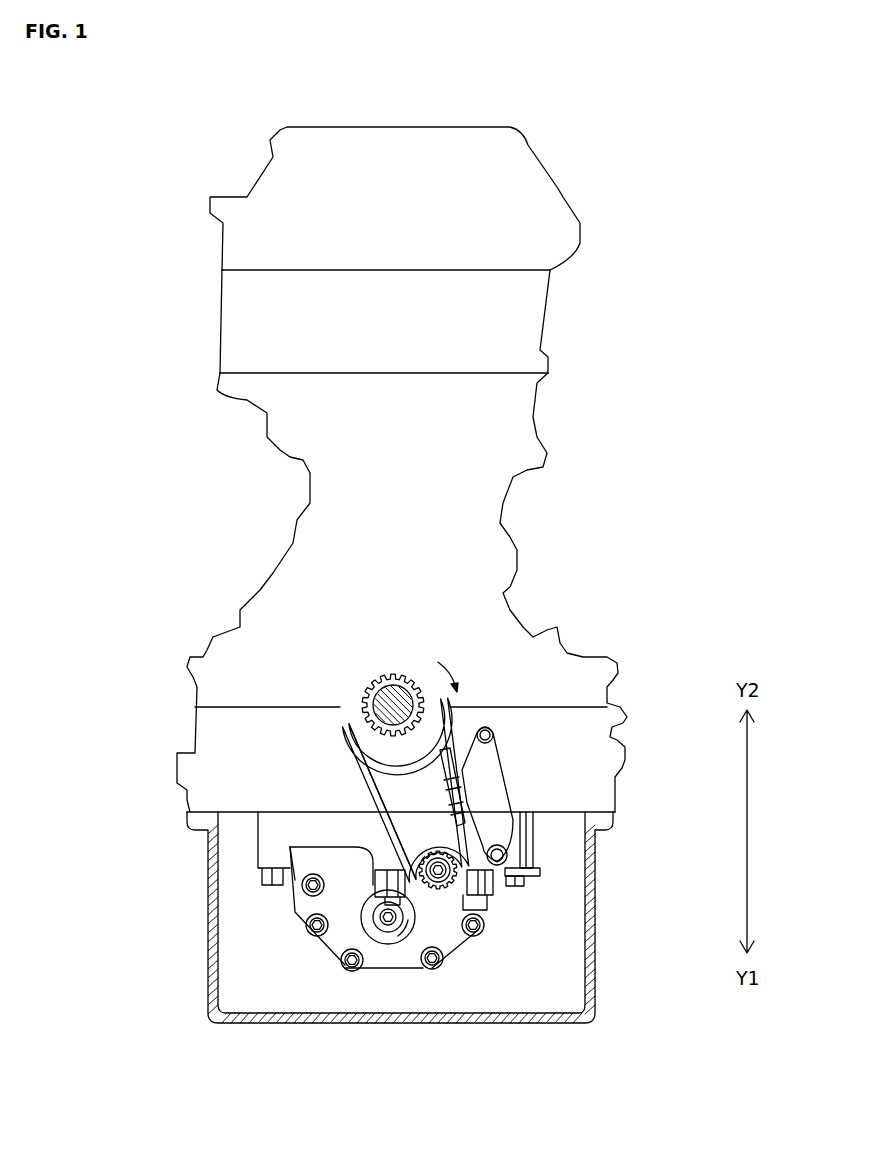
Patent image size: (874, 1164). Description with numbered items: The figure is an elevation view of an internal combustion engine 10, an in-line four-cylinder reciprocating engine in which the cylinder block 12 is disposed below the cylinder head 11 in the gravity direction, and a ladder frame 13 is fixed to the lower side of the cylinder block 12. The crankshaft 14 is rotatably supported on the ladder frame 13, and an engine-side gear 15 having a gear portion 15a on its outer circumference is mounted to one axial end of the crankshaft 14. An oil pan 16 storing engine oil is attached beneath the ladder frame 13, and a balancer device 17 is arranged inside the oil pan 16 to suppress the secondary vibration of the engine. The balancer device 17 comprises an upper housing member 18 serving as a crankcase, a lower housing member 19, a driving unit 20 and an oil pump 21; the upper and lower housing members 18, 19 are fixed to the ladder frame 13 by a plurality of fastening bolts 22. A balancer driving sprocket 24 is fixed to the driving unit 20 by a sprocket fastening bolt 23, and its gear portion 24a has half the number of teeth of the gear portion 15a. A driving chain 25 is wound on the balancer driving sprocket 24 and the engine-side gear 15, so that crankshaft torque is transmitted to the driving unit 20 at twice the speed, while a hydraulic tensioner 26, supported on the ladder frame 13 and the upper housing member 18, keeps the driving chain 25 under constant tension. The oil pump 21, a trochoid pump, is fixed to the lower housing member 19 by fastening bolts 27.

The internal combustion engine 10 is at (578, 187).
The cylinder head 11 is at (497, 145).
The cylinder block 12 is at (523, 318).
The ladder frame 13 is at (615, 758).
The crankshaft 14 is at (400, 690).
The engine-side gear 15 is at (363, 680).
The gear portion 15a is at (377, 767).
The oil pan 16 is at (210, 885).
The balancer device 17 is at (536, 858).
The upper housing member 18 is at (522, 837).
The lower housing member 19 is at (470, 897).
The driving unit 20 is at (448, 898).
The oil pump 21 is at (333, 958).
The fastening bolts 22 is at (522, 882).
The sprocket fastening bolt 23 is at (300, 917).
The balancer driving sprocket 24 is at (400, 935).
The gear portion 24a is at (333, 843).
The driving chain 25 is at (343, 730).
The tensioner 26 is at (500, 792).
The fastening bolts 27 is at (317, 925).